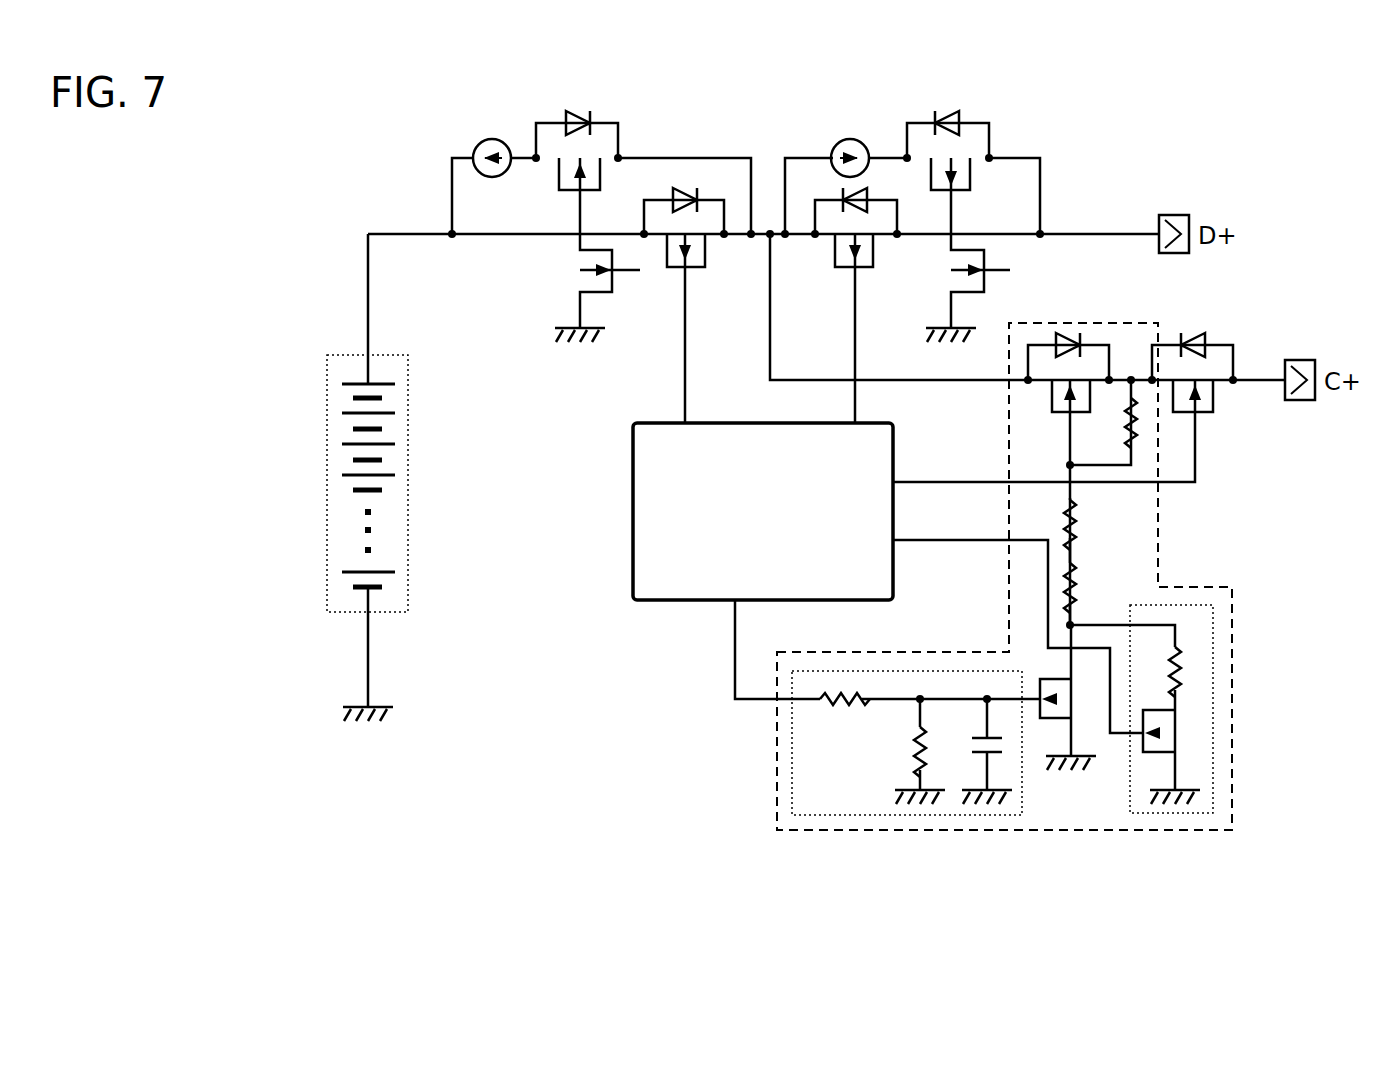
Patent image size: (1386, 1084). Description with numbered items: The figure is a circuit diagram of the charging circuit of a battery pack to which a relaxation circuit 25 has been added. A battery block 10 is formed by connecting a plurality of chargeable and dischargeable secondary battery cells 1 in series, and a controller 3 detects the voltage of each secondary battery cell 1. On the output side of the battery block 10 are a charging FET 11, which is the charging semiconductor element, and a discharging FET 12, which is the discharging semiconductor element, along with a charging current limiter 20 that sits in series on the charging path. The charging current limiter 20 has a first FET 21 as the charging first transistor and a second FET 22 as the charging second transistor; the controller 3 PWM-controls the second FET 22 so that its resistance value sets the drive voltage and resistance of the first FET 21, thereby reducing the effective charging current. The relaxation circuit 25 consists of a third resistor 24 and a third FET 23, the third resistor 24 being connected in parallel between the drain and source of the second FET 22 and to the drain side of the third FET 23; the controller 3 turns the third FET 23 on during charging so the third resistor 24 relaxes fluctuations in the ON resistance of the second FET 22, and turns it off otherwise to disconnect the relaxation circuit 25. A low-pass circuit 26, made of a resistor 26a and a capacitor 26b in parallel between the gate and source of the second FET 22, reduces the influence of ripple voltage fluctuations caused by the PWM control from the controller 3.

The secondary battery cell 1 is at (360, 383).
The controller 3 is at (633, 533).
The battery block 10 is at (352, 477).
The charging FET 11 is at (687, 185).
The discharging FET 12 is at (828, 185).
The charging current limiter 20 is at (1060, 832).
The first FET 21 is at (1042, 417).
The second FET 22 is at (1045, 677).
The third FET 23 is at (1184, 727).
The third resistor 24 is at (1180, 642).
The relaxation circuit 25 is at (1179, 759).
The low-pass circuit 26 is at (938, 792).
The resistor 26a is at (868, 723).
The capacitor 26b is at (998, 754).